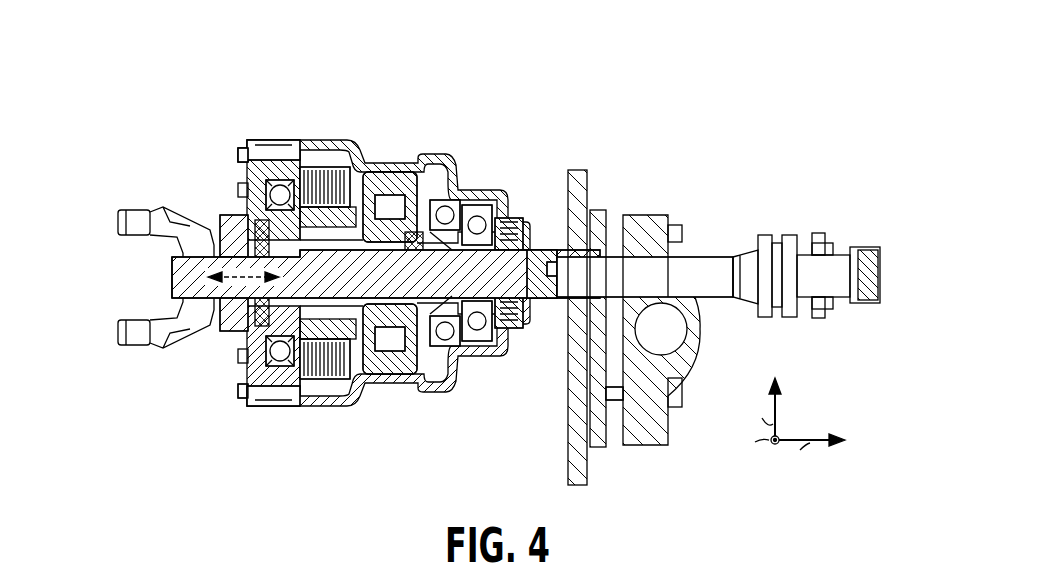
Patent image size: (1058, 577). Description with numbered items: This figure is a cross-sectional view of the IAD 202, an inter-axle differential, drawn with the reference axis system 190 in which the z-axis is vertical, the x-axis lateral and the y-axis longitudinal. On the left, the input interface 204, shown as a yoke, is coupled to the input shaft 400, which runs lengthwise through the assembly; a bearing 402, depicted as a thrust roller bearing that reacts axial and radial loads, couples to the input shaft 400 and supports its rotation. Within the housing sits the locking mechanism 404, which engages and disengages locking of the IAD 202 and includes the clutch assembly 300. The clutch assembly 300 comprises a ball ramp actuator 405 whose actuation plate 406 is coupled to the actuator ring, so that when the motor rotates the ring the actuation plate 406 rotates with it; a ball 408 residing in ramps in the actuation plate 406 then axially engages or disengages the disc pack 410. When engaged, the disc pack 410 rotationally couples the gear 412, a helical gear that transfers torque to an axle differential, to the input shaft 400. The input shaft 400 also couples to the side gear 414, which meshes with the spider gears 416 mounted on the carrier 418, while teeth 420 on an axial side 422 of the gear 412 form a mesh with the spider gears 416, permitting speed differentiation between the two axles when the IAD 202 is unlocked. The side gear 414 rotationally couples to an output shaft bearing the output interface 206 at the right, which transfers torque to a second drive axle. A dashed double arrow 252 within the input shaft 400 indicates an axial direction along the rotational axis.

The axis system 190 is at (795, 411).
The IAD 202 is at (354, 232).
The input interface 204 is at (100, 206).
The output interface 206 is at (897, 254).
The axial displacement 252 is at (232, 282).
The clutch assembly 300 is at (238, 143).
The input shaft 400 is at (343, 289).
The bearing 402 is at (236, 214).
The locking mechanism 404 is at (398, 78).
The ball ramp actuator 405 is at (243, 122).
The actuation plate 406 is at (272, 172).
The ball 408 is at (283, 367).
The disc pack 410 is at (328, 170).
The gear 412 is at (380, 364).
The side gear 414 is at (507, 232).
The spider gears 416 is at (480, 218).
The carrier 418 is at (446, 205).
The teeth 420 is at (414, 235).
The axial side 422 is at (440, 240).